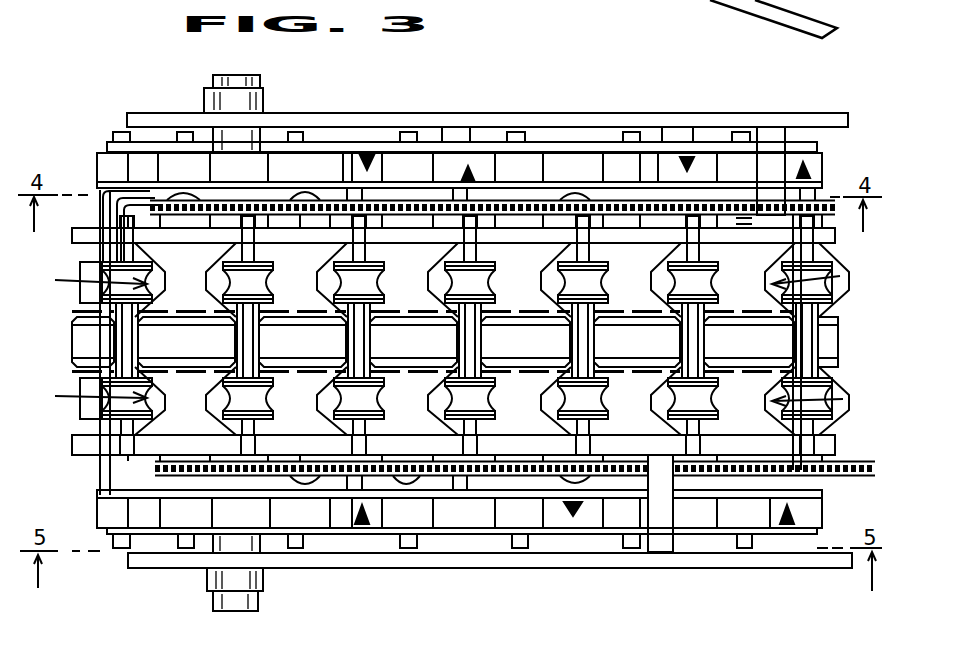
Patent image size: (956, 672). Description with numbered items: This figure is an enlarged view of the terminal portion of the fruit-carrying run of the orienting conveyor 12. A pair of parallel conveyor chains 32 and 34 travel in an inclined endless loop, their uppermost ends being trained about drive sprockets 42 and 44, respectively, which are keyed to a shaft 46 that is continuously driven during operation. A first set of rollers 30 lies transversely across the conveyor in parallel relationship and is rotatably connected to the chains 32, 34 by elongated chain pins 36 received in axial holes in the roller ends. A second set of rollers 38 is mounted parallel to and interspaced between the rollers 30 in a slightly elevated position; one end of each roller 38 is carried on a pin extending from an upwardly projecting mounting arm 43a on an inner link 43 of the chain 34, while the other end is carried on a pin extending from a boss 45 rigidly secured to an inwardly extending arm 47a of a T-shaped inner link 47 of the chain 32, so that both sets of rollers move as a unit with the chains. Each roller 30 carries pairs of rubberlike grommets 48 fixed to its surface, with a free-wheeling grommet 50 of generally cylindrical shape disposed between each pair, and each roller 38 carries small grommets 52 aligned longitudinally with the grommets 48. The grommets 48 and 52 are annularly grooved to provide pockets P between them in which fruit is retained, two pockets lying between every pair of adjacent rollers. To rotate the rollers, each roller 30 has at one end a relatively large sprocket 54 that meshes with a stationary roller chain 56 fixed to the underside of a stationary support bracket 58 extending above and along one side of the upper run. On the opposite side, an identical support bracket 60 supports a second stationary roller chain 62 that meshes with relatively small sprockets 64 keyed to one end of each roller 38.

The conveyor 12 is at (608, 138).
The shaft 46 is at (246, 80).
The drive sprocket 42 is at (256, 165).
The conveyor chain 32 is at (816, 143).
The chain pin 36 is at (521, 132).
The stationary roller chain 56 is at (300, 196).
The inwardly extending arm 47a is at (460, 192).
The T-shaped inner link 47 is at (648, 192).
The sprocket 54 is at (188, 226).
The roller 30 is at (304, 229).
The grommet 48 is at (395, 293).
The free-wheeling grommet 50 is at (148, 326).
The roller 38 is at (248, 339).
The boss 45 is at (462, 234).
The stationary support bracket 58 is at (742, 230).
The small grommet 52 is at (264, 380).
The pocket P is at (452, 339).
The sprocket 64 is at (273, 463).
The inner link 43 is at (808, 491).
The stationary roller chain 62 is at (503, 478).
The mounting arm 43a is at (248, 498).
The support bracket 60 is at (633, 474).
The drive sprocket 44 is at (222, 538).
The conveyor chain 34 is at (489, 535).